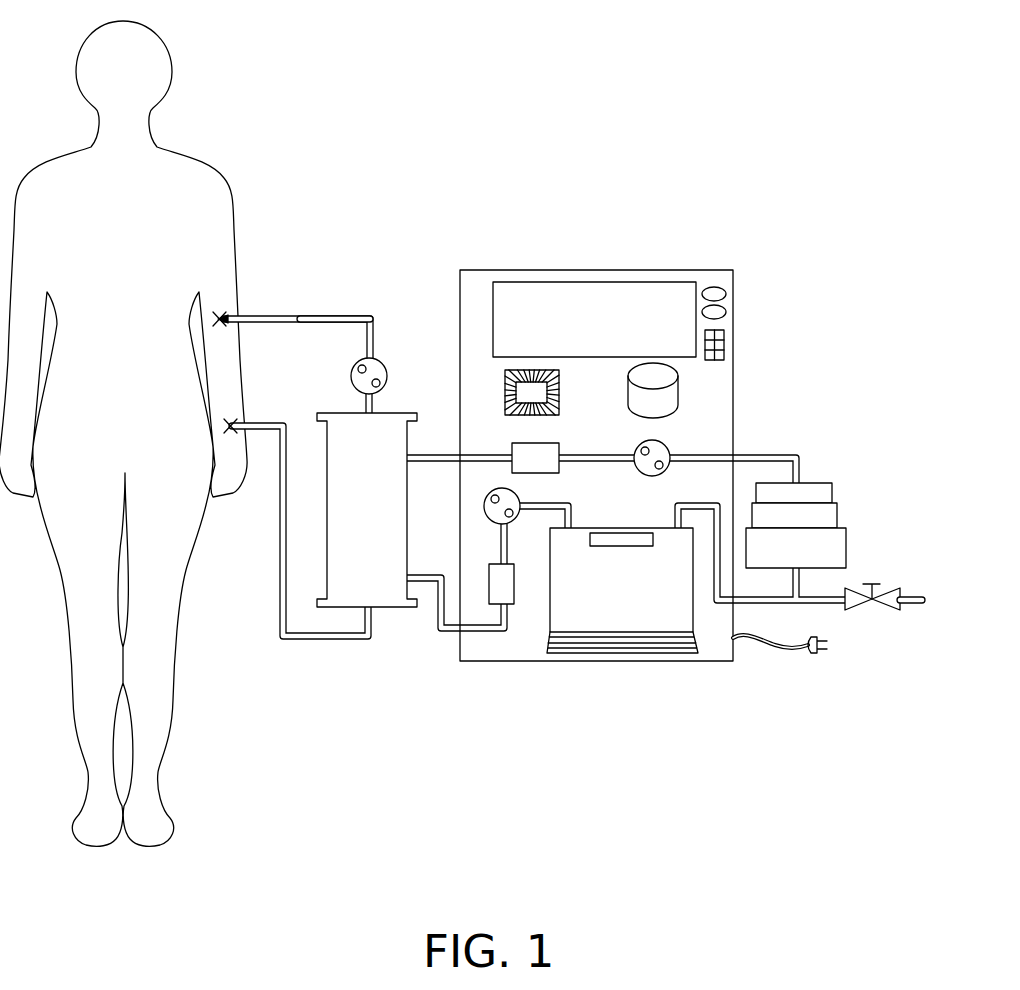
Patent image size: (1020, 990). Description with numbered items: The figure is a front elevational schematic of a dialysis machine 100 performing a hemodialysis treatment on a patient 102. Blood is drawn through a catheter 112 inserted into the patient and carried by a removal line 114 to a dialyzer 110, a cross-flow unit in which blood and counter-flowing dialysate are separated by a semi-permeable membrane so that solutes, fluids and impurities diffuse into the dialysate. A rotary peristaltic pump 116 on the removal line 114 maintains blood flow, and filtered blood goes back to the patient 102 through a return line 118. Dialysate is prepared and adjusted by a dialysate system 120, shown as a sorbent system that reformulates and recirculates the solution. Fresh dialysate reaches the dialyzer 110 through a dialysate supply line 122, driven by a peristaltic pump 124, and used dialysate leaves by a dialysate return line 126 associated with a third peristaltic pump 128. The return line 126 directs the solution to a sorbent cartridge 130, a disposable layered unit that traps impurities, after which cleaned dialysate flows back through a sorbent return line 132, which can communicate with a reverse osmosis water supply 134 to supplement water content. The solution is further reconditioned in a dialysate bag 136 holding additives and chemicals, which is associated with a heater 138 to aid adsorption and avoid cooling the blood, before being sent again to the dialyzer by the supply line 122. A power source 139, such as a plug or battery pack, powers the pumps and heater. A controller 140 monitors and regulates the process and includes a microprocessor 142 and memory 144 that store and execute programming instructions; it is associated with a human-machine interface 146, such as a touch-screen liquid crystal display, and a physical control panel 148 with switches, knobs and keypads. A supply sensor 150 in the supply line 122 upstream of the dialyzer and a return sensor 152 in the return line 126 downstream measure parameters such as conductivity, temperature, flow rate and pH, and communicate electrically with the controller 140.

The dialysis machine 100 is at (776, 284).
The patient 102 is at (148, 175).
The dialyzer 110 is at (357, 430).
The catheter 112 is at (240, 318).
The removal line 114 is at (320, 318).
The pump 116 is at (386, 368).
The return line 118 is at (283, 560).
The dialysate system 120 is at (530, 628).
The dialysate supply line 122 is at (440, 630).
The peristaltic pump 124 is at (470, 506).
The dialysate return line 126 is at (445, 452).
The third peristaltic pump 128 is at (670, 449).
The sorbent cartridge 130 is at (812, 518).
The sorbent return line 132 is at (720, 603).
The reverse osmosis water supply 134 is at (887, 606).
The dialysate bag 136 is at (625, 583).
The heater 138 is at (622, 657).
The power source 139 is at (812, 655).
The controller 140 is at (723, 272).
The microprocessor 142 is at (505, 386).
The memory 144 is at (653, 372).
The human-machine interface 146 is at (603, 303).
The physical control panel 148 is at (722, 323).
The supply sensor 150 is at (505, 583).
The return sensor 152 is at (545, 452).